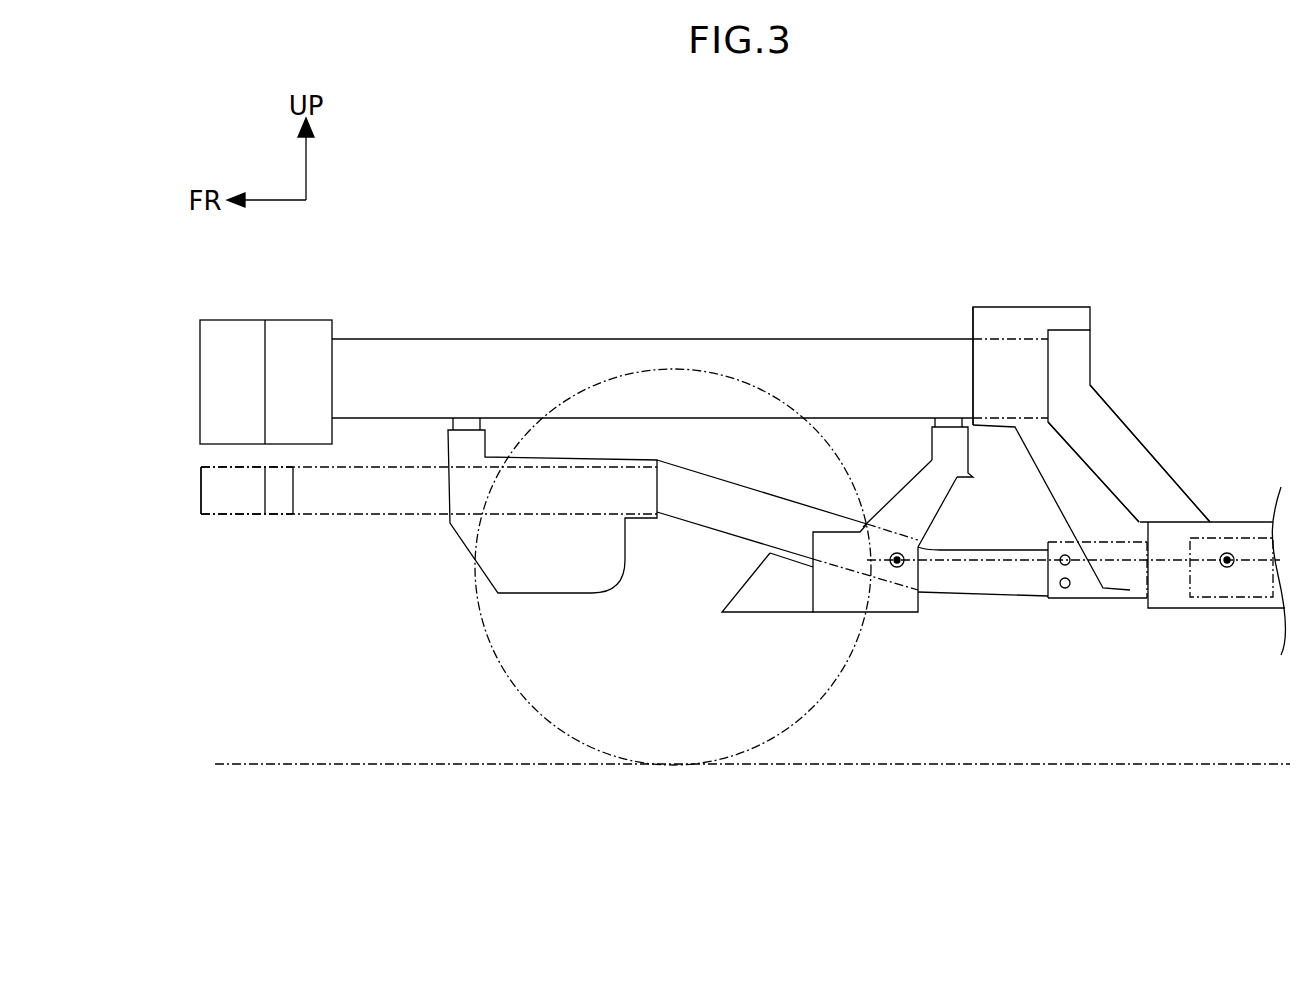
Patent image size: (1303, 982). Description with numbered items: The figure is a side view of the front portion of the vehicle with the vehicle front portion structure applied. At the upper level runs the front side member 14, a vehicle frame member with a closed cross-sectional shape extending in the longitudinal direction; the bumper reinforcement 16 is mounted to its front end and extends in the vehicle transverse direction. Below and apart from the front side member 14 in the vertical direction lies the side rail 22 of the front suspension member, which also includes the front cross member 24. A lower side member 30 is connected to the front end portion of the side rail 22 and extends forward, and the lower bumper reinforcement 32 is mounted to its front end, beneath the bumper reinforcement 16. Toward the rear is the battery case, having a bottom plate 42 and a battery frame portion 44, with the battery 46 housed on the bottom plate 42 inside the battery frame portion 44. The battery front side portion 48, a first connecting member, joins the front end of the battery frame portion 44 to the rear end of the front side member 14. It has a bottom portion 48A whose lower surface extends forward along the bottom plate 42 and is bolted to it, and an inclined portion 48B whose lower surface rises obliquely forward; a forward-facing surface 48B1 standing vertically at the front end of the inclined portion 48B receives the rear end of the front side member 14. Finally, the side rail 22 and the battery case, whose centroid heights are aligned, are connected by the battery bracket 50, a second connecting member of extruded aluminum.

The front side member 14 is at (555, 339).
The bumper reinforcement 16 is at (213, 366).
The side rail 22 is at (720, 522).
The front cross member 24 is at (493, 568).
The lower side member 30 is at (335, 514).
The lower bumper reinforcement 32 is at (230, 514).
The bottom plate 42 is at (1175, 608).
The battery frame portion 44 is at (1147, 578).
The battery 46 is at (1253, 608).
The battery front side portion 48 is at (1062, 307).
The bottom portion 48A is at (1110, 517).
The inclined portion 48B is at (1055, 475).
The forward-facing surface 48B1 is at (973, 337).
The battery bracket 50 is at (1077, 600).